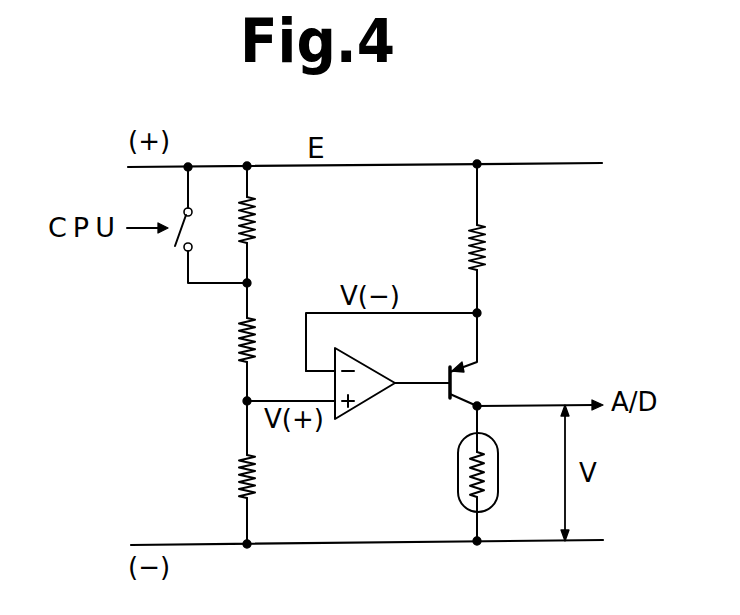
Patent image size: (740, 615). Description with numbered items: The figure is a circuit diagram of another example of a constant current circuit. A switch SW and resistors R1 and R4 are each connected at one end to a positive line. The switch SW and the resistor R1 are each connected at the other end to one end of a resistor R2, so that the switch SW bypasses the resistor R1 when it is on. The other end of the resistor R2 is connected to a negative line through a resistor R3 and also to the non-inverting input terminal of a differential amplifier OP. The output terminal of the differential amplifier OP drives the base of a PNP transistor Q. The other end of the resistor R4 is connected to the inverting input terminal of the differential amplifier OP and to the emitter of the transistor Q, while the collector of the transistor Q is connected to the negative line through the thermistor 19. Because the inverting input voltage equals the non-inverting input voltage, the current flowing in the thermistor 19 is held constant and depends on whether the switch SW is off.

The thermistor 19 is at (458, 496).
The resistor R1 is at (270, 224).
The resistor R2 is at (269, 342).
The resistor R3 is at (270, 472).
The resistor R4 is at (500, 238).
The switch SW is at (211, 225).
The differential amplifier OP is at (362, 413).
The PNP transistor Q is at (464, 388).